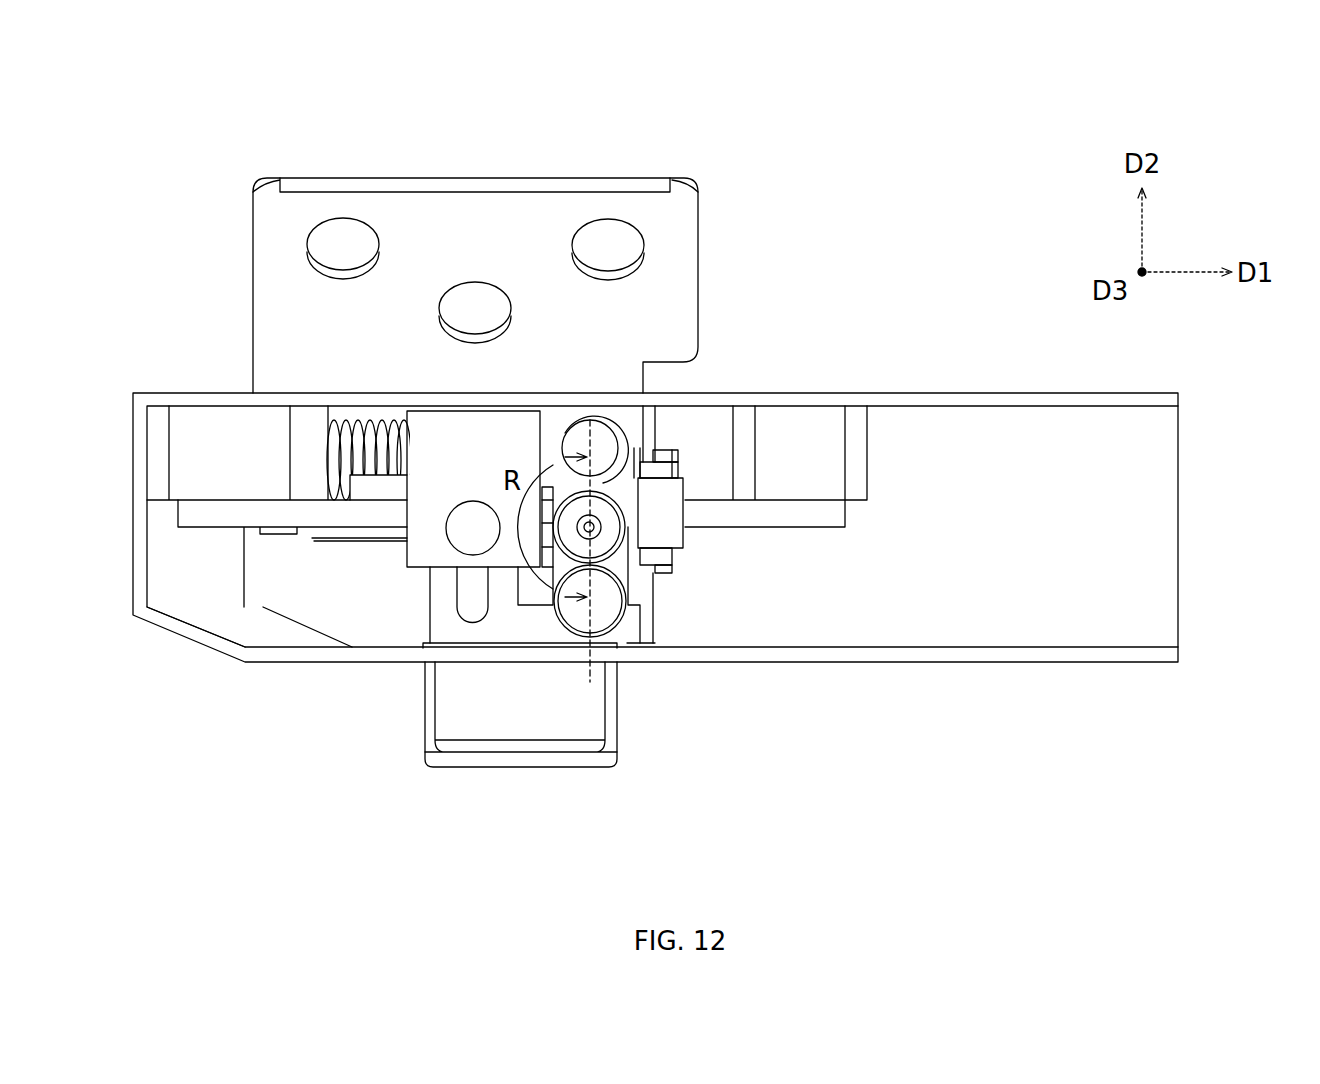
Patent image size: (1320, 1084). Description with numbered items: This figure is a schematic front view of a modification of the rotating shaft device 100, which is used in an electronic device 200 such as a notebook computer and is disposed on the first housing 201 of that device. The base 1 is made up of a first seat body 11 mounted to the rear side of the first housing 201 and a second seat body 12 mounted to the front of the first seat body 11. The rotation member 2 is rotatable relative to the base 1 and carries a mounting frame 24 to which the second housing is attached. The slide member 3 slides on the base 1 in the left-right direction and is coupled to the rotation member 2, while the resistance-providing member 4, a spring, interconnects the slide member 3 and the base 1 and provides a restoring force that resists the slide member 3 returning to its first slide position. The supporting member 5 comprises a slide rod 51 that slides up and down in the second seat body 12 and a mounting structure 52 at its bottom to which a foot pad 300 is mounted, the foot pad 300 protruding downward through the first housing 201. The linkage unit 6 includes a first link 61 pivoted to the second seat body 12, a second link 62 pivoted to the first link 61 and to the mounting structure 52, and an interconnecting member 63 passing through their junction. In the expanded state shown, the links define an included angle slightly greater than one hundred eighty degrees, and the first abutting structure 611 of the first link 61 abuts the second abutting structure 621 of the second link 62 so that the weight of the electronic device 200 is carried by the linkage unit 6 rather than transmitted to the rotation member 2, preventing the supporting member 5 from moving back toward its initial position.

The rotation member 2 is at (425, 178).
The mounting frame 24 is at (490, 215).
The resistance-providing member 4 is at (358, 422).
The first abutting structure 611 is at (633, 470).
The linkage unit 6 is at (641, 492).
The interconnecting member 63 is at (600, 523).
The first link 61 is at (596, 425).
The slide member 3 is at (690, 537).
The first seat body 11 is at (210, 510).
The base 1 is at (272, 530).
The second seat body 12 is at (415, 555).
The slide rod 51 is at (438, 593).
The supporting member 5 is at (423, 630).
The mounting structure 52 is at (505, 628).
The foot pad 300 is at (518, 767).
The second link 62 is at (630, 573).
The second abutting structure 621 is at (655, 575).
The rotating shaft device 100 is at (684, 560).
The first housing 201 is at (962, 663).
The electronic device 200 is at (1071, 665).